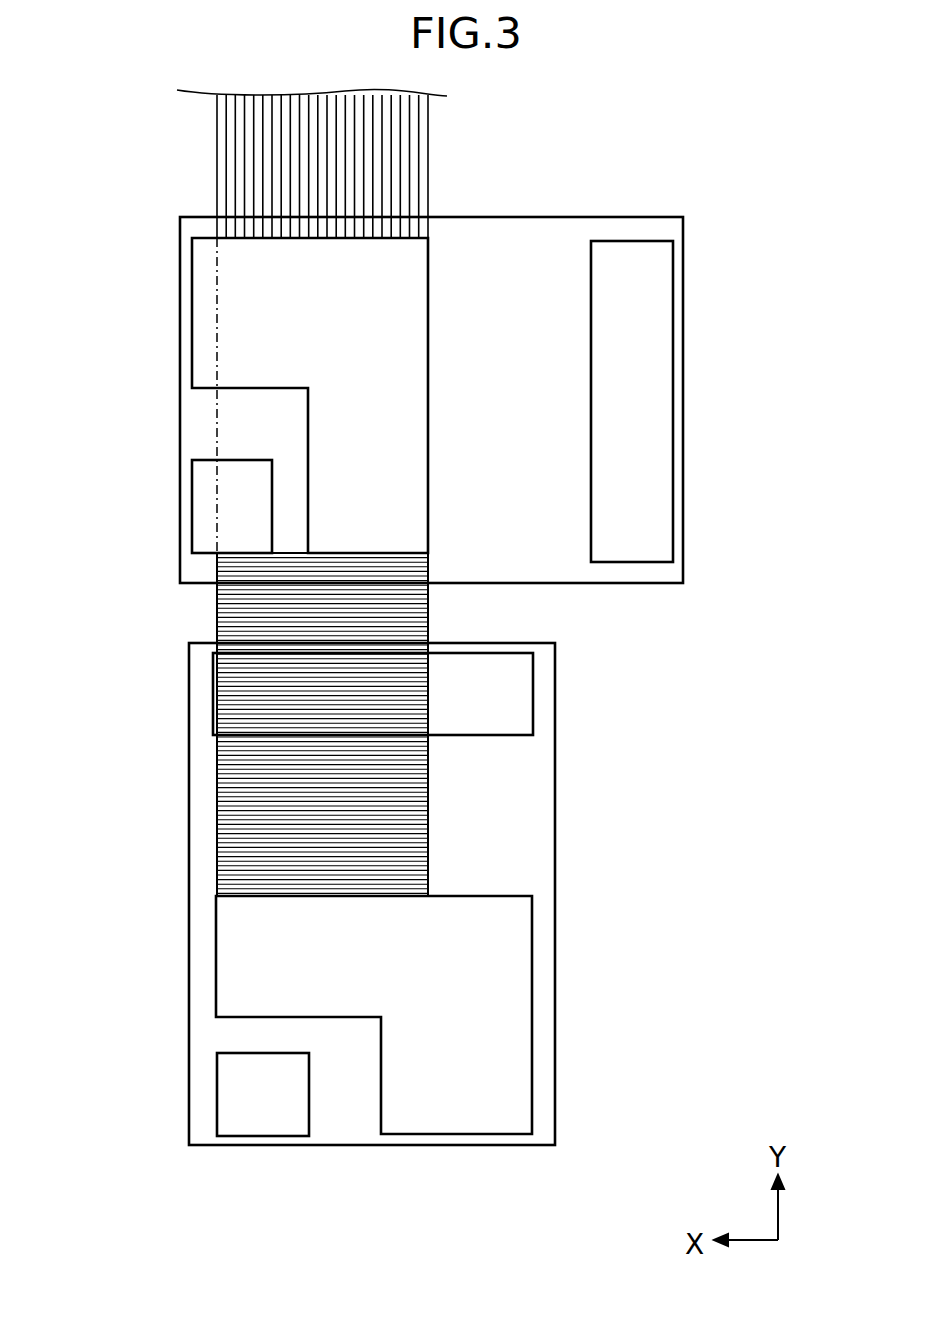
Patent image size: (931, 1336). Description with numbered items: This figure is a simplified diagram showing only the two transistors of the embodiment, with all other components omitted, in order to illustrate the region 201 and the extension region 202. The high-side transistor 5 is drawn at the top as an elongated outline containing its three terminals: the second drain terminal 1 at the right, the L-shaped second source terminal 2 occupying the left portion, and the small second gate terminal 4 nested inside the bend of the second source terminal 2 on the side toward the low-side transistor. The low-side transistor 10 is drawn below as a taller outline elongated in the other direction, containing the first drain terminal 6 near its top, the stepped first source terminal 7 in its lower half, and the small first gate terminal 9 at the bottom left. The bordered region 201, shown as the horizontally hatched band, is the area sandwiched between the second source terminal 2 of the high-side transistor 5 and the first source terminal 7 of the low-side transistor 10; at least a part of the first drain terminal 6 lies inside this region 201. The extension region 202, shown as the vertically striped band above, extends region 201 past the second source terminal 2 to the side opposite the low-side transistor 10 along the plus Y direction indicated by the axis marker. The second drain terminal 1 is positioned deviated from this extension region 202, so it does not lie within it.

The second drain terminal 1 is at (638, 406).
The second source terminal 2 is at (230, 311).
The second gate terminal 4 is at (230, 507).
The high-side transistor 5 is at (514, 262).
The first drain terminal 6 is at (486, 690).
The first source terminal 7 is at (486, 1005).
The first gate terminal 9 is at (250, 1091).
The low-side transistor 10 is at (486, 820).
The region 201 is at (230, 757).
The extension region 202 is at (230, 163).